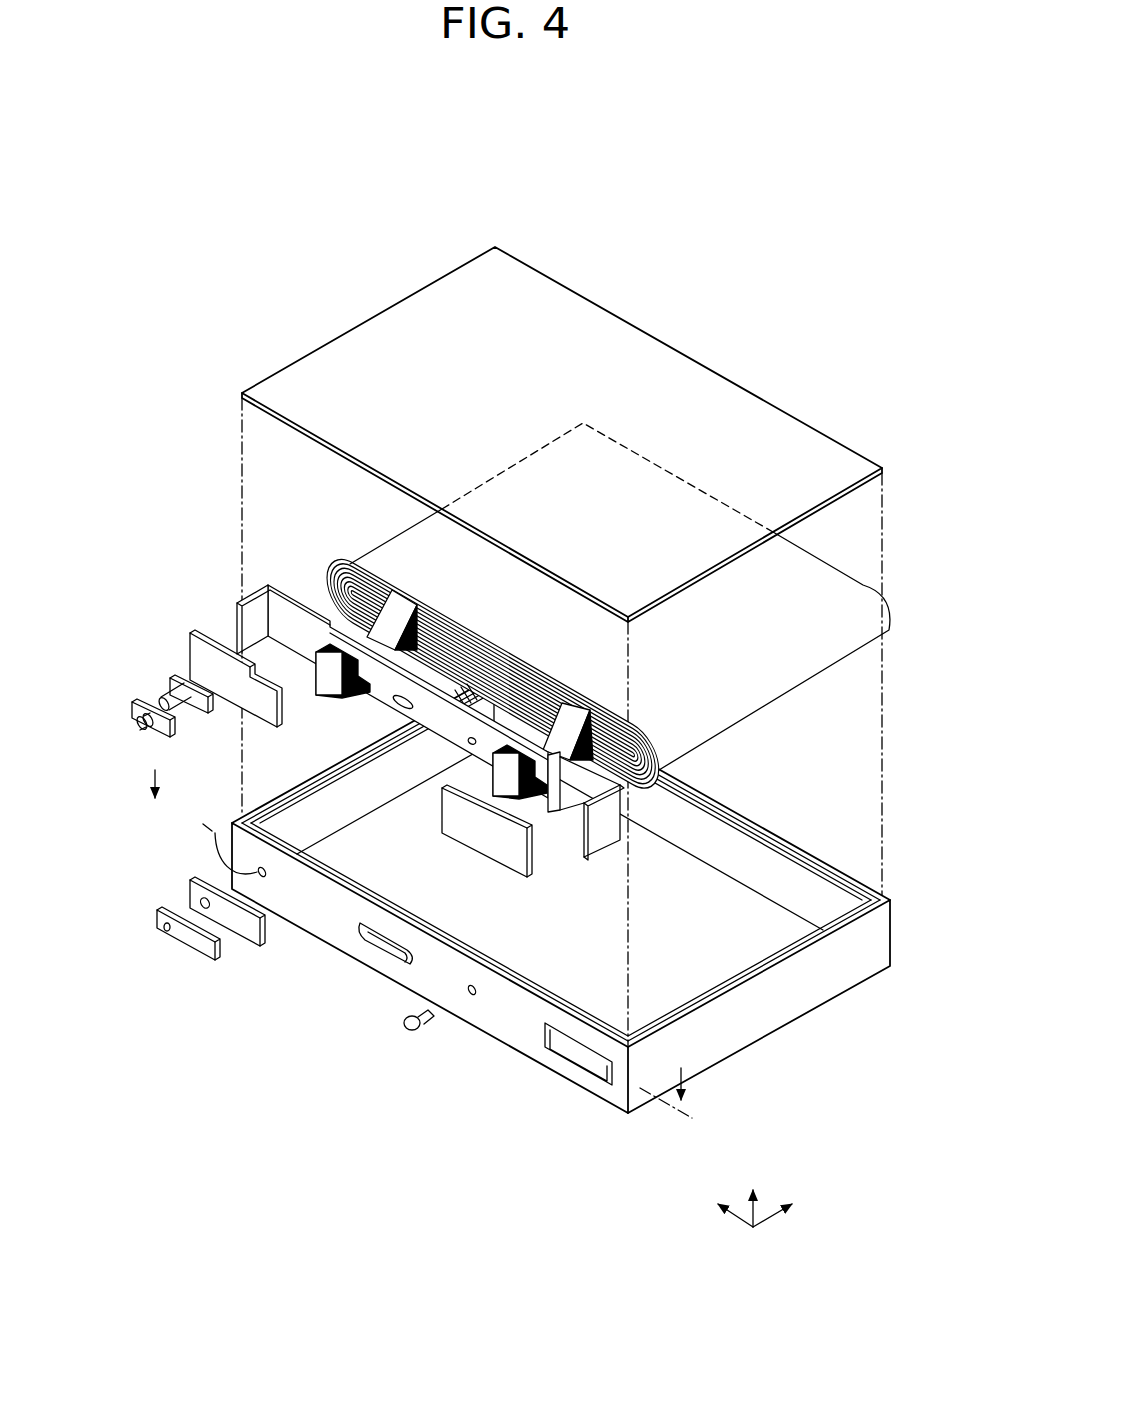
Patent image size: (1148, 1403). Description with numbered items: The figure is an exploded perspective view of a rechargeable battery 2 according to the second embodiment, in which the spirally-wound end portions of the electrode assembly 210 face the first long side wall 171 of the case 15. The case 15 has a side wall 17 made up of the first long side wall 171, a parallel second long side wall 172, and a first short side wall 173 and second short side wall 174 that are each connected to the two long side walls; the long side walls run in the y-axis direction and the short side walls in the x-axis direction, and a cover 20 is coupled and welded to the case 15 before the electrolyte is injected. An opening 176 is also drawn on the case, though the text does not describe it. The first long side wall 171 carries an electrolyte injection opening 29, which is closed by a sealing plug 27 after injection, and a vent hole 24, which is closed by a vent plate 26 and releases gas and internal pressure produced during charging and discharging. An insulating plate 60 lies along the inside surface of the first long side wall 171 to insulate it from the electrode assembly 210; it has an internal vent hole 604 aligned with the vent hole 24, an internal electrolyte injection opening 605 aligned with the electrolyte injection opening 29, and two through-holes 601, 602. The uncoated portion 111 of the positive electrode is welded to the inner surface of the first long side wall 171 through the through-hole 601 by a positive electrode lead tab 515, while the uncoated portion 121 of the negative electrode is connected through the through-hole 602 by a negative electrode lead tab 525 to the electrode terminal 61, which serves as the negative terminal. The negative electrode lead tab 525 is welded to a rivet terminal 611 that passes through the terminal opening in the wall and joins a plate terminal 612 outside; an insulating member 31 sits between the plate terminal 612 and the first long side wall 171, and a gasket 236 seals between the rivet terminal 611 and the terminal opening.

The rechargeable battery 2 is at (347, 225).
The case 15 is at (780, 1038).
The side wall 17 is at (170, 228).
The first long side wall 171 is at (290, 963).
The second long side wall 172 is at (790, 841).
The first short side wall 173 is at (848, 1028).
The second short side wall 174 is at (333, 768).
The opening 176 is at (575, 1062).
The cover 20 is at (672, 383).
The electrode assembly 210 is at (830, 556).
The uncoated portion 111 is at (508, 787).
The uncoated portion 121 is at (306, 652).
The negative electrode lead tab 525 is at (215, 638).
The gasket 236 is at (132, 696).
The electrode terminal 61 is at (170, 380).
The rivet terminal 611 is at (200, 745).
The plate terminal 612 is at (152, 917).
The insulating member 31 is at (190, 880).
The vent hole 24 is at (362, 938).
The vent plate 26 is at (400, 950).
The sealing plug 27 is at (408, 1028).
The electrolyte injection opening 29 is at (470, 996).
The insulating plate 60 is at (605, 838).
The through-hole 601 is at (532, 804).
The through-hole 602 is at (363, 700).
The internal vent hole 604 is at (402, 712).
The internal electrolyte injection opening 605 is at (472, 747).
The positive electrode lead tab 515 is at (512, 857).